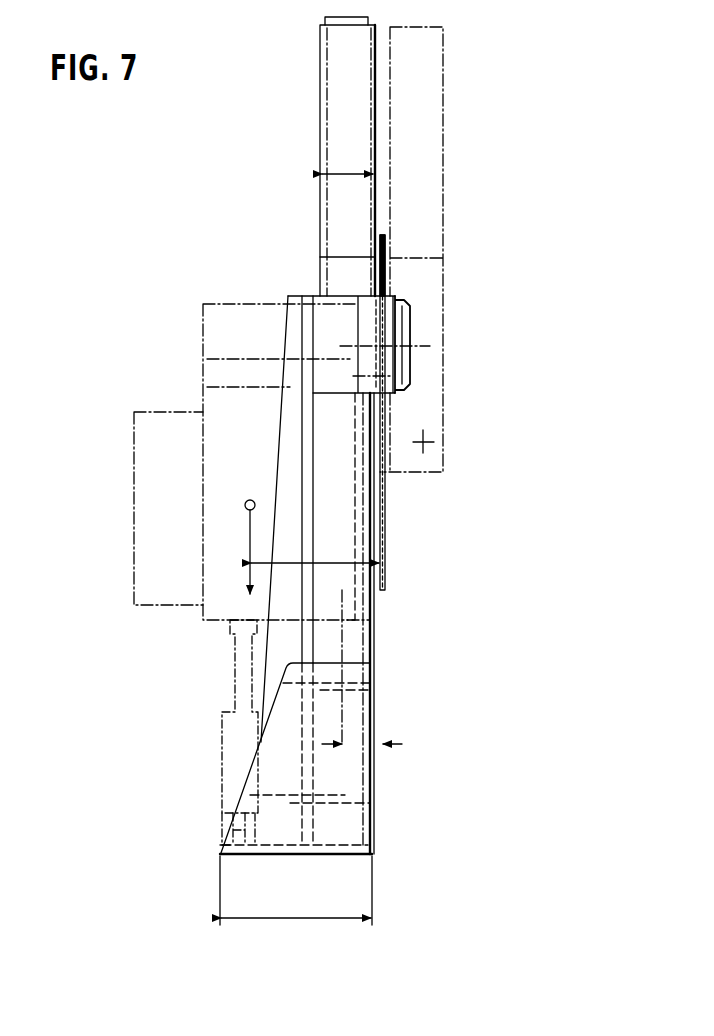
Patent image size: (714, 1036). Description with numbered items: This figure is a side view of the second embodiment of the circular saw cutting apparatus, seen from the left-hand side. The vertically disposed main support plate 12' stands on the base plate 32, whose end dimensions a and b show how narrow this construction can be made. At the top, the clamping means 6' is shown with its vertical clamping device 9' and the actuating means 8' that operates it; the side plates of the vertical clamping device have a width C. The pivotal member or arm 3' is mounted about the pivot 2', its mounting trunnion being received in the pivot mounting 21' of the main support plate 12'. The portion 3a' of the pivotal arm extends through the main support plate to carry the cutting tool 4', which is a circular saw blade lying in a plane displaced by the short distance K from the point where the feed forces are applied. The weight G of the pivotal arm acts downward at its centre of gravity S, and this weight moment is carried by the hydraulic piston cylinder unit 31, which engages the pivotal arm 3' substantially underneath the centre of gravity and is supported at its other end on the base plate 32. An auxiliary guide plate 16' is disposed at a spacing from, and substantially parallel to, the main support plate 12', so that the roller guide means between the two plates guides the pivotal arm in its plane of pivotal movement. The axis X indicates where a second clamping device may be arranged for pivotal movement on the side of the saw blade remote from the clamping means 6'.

The portion of pivotal arm 3a' is at (454, 249).
The actuating means 8' is at (318, 156).
The clamping means 6' is at (275, 150).
The vertical clamping device 9' is at (310, 269).
The cutting tool 4' is at (434, 412).
The pivot 2' is at (390, 344).
The pivot mounting 21' is at (437, 347).
The axis X is at (432, 439).
The pivotal member or arm 3' is at (244, 492).
The centre of gravity S is at (245, 494).
The weight moment G is at (249, 564).
The dimension of base plate a is at (315, 549).
The width of side plates C is at (347, 161).
The distance K is at (366, 734).
The dimension of base plate b is at (296, 890).
The auxiliary guide plate 16' is at (343, 570).
The main support plate 12' is at (322, 623).
The hydraulic piston cylinder unit 31 is at (222, 740).
The base plate 32 is at (221, 847).